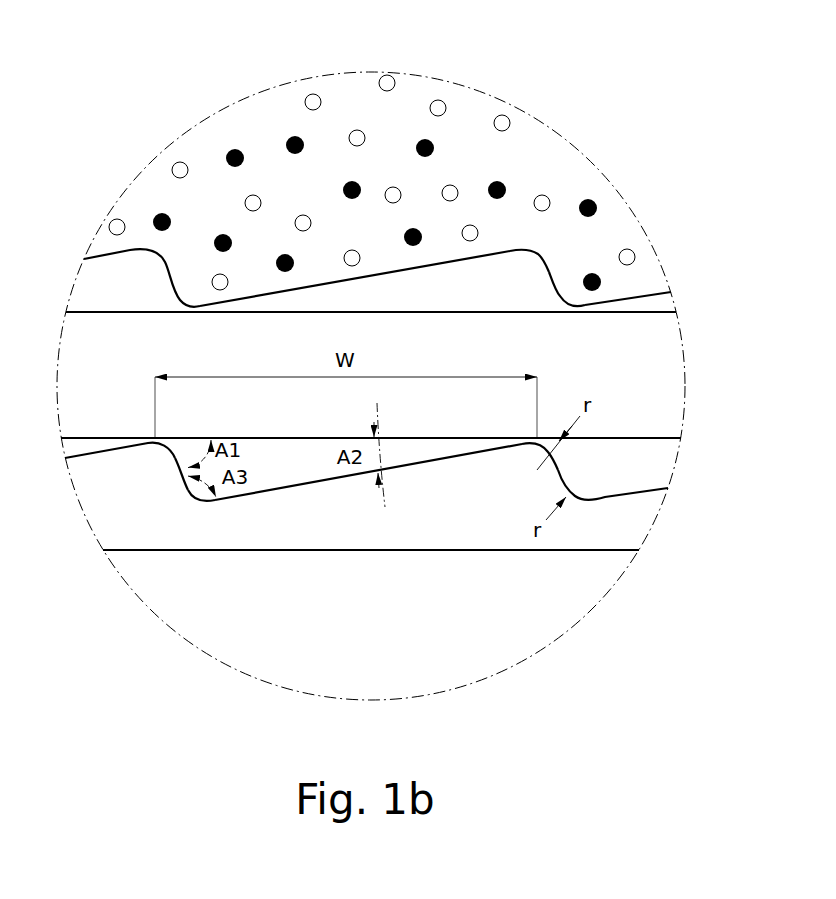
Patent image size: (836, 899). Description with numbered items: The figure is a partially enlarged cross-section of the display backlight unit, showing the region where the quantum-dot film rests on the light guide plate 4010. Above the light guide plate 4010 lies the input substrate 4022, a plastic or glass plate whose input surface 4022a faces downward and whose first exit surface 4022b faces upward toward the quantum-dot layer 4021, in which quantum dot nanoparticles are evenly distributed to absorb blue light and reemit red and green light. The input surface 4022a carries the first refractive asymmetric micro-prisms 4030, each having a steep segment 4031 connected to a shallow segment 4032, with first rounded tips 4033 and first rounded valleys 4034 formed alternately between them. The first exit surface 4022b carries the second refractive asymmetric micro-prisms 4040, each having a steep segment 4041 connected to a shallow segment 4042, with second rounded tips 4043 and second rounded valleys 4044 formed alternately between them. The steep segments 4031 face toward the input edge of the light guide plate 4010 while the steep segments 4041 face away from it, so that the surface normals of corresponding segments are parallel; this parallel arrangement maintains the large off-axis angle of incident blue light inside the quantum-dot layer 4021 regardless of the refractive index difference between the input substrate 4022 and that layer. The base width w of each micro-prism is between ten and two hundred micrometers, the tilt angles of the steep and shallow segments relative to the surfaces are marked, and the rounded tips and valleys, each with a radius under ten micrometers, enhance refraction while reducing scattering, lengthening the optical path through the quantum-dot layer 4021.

The light guide plate 4010 is at (540, 600).
The quantum-dot layer 4021 is at (525, 160).
The input substrate 4022 is at (425, 357).
The input surface 4022a is at (632, 440).
The first exit surface 4022b is at (617, 313).
The first refractive asymmetric micro-prisms 4030 is at (364, 599).
The steep segment 4031 is at (182, 469).
The shallow segment 4032 is at (255, 497).
The first rounded tips 4033 is at (196, 497).
The first rounded valleys 4034 is at (533, 447).
The second refractive asymmetric micro-prisms 4040 is at (408, 161).
The steep segment 4041 is at (555, 278).
The shallow segment 4042 is at (442, 260).
The second rounded tips 4043 is at (540, 250).
The second rounded valleys 4044 is at (185, 297).